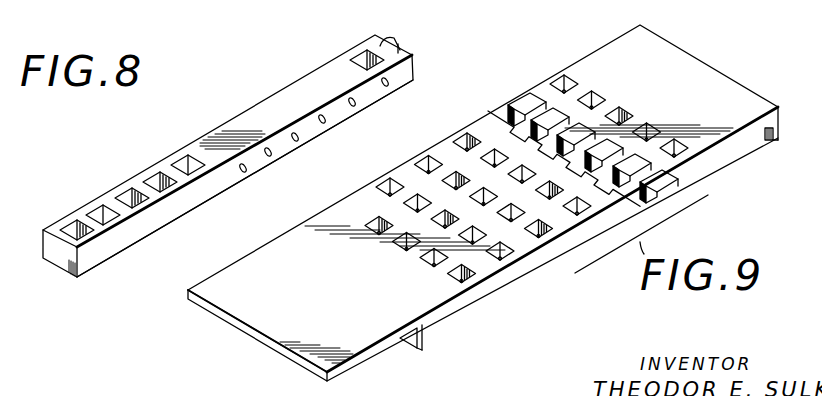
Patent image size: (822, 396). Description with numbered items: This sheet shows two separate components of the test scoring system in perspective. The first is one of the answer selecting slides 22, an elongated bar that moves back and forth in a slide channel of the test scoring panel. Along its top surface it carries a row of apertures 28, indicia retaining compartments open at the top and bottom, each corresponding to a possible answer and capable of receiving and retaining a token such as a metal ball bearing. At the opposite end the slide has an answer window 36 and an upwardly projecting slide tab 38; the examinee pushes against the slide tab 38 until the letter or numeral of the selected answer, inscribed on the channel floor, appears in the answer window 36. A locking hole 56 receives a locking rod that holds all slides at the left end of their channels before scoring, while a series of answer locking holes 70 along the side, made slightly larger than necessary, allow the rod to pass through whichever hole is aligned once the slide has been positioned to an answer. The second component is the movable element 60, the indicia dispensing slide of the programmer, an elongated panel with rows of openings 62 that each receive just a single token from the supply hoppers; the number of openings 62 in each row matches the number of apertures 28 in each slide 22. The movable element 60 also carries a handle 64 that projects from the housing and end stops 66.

In FIG. 8, the answer selecting slide 22 is at (286, 97).
In FIG. 8, the apertures 28 is at (176, 139).
In FIG. 8, the answer window 36 is at (361, 56).
In FIG. 8, the slide tab 38 is at (393, 46).
In FIG. 8, the locking hole 56 is at (390, 80).
In FIG. 8, the answer locking hole 70 is at (401, 91).
In FIG. 9, the movable element 60 is at (343, 300).
In FIG. 9, the openings 62 is at (648, 122).
In FIG. 9, the handle 64 is at (300, 345).
In FIG. 9, the end stops 66 is at (425, 340).